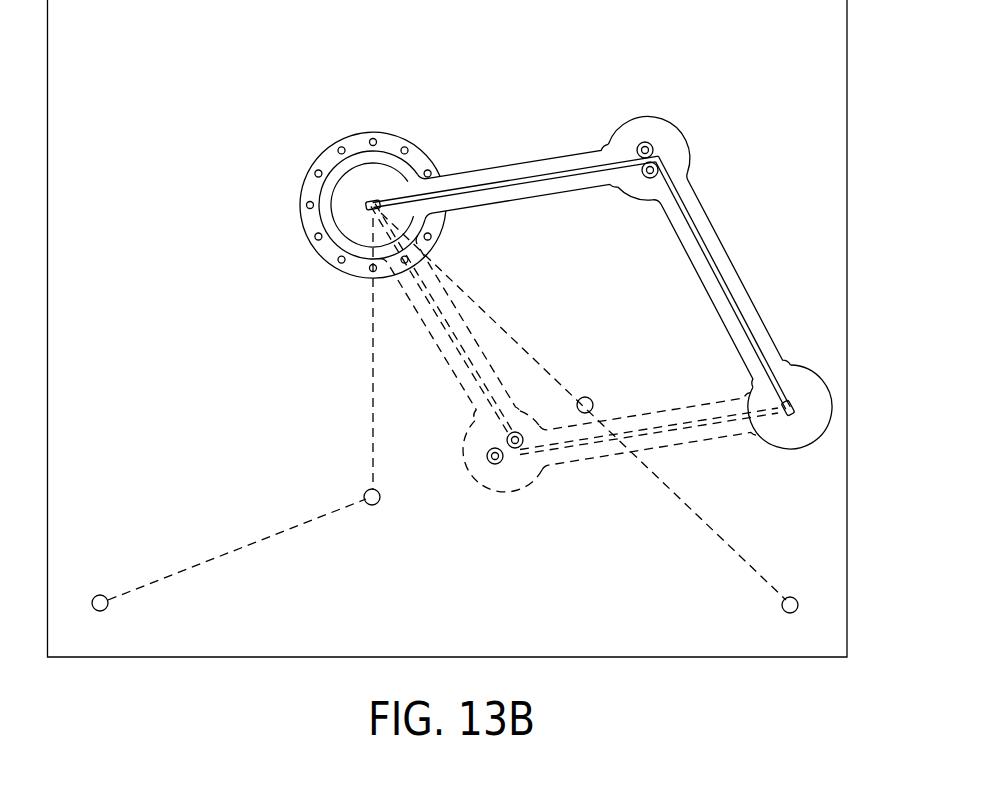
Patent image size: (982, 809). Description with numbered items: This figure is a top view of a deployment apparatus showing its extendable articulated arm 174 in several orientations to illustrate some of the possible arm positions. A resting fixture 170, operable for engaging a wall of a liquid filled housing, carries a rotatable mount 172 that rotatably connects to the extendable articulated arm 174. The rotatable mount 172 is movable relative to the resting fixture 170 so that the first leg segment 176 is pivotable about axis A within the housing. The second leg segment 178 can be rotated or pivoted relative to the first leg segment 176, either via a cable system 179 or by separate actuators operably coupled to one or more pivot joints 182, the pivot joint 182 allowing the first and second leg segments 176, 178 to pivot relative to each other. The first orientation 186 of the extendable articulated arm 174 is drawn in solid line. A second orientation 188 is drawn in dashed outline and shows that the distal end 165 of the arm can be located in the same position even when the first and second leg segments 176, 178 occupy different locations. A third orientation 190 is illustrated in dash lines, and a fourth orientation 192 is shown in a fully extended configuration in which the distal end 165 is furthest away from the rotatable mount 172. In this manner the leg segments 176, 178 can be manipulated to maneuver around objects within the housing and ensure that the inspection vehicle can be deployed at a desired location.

The resting fixture 170 is at (302, 177).
The rotatable mount 172 is at (345, 222).
The extendable articulated arm 174 is at (594, 255).
The first leg segment 176 is at (523, 193).
The second leg segment 178 is at (752, 300).
The cable system 179 is at (708, 245).
The pivot joint 182 is at (670, 143).
The distal end 165 is at (818, 445).
The first orientation 186 is at (538, 128).
The second orientation 188 is at (575, 478).
The third orientation 190 is at (205, 560).
The fourth orientation 192 is at (702, 535).